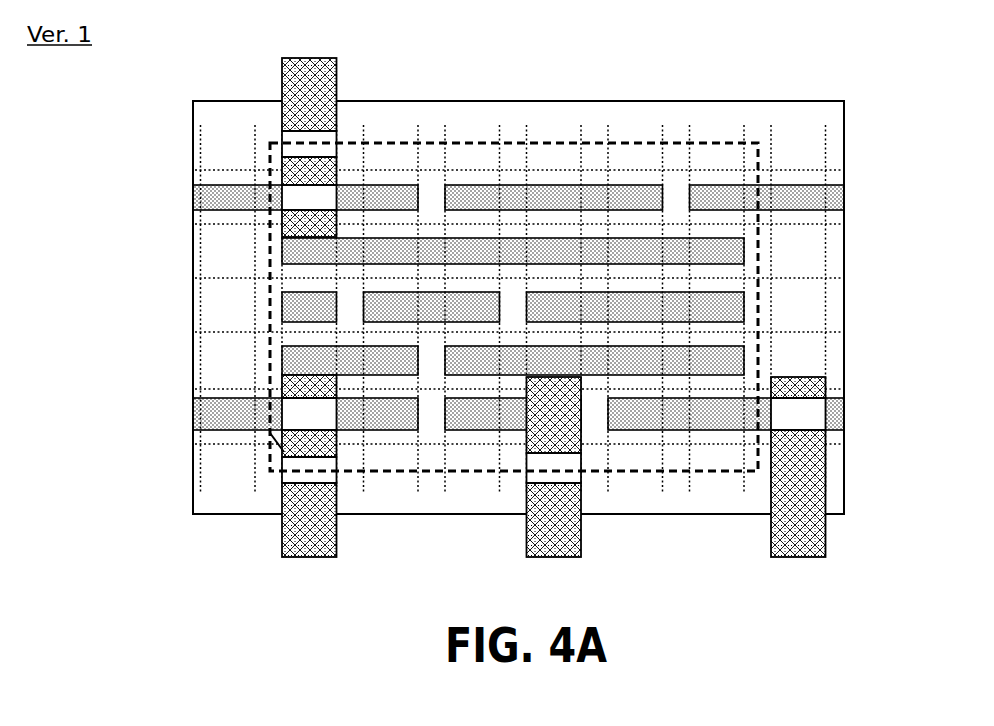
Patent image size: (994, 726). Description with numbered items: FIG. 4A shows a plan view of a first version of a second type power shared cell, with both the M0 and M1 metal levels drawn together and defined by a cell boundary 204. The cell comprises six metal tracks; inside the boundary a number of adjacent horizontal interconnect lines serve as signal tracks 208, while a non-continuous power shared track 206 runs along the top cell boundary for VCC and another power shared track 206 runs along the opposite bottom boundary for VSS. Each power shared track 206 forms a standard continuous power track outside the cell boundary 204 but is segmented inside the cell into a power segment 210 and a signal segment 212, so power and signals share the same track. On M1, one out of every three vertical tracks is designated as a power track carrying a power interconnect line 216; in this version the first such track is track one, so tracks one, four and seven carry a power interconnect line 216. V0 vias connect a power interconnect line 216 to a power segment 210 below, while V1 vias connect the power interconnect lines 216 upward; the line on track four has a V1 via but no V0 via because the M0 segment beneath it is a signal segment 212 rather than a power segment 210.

The cell boundary 204 is at (277, 142).
The power shared track 206 is at (557, 379).
The signal tracks 208 is at (855, 223).
The power segment 210 is at (355, 431).
The signal segment 212 is at (480, 431).
The power interconnect line 216 is at (337, 52).